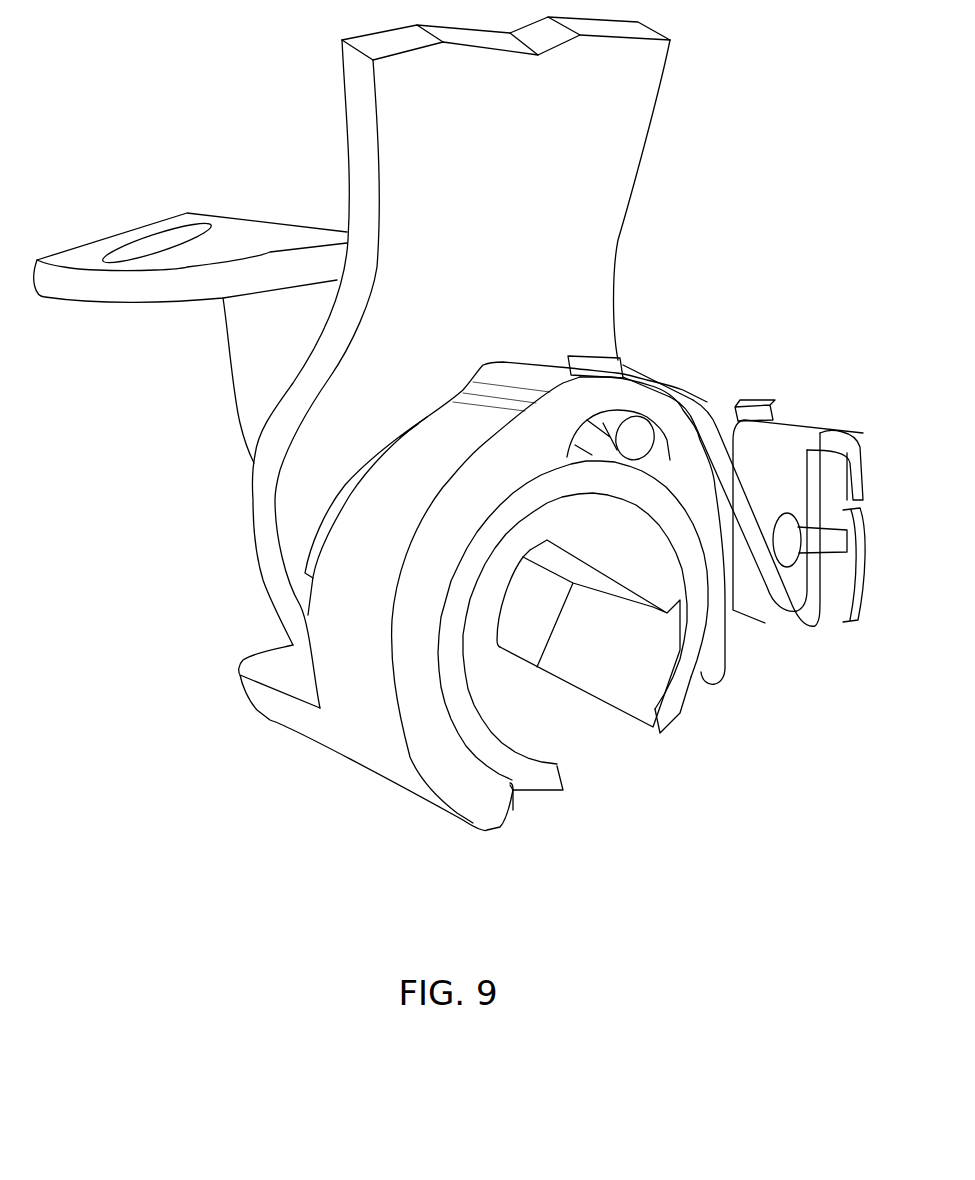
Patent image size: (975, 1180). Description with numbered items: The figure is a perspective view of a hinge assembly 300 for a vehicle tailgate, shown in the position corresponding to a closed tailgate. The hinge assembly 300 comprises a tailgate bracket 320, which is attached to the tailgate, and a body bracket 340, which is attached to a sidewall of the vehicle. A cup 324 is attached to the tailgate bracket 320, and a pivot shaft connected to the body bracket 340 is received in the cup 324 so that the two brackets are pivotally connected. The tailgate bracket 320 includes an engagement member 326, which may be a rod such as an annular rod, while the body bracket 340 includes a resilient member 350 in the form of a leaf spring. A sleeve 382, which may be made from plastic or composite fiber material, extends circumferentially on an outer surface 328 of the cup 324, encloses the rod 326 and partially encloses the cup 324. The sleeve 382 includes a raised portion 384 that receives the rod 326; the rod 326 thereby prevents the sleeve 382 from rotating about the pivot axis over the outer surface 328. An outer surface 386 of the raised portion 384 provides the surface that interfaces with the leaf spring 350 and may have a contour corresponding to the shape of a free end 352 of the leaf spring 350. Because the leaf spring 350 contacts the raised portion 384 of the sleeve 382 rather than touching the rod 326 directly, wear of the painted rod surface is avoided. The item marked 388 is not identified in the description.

The hinge assembly 300 is at (455, 435).
The tailgate bracket 320 is at (350, 153).
The cup 324 is at (553, 795).
The engagement member 326 is at (703, 397).
The outer surface 328 is at (673, 717).
The body bracket 340 is at (750, 406).
The resilient member 350 is at (750, 516).
The free end 352 is at (672, 377).
The sleeve 382 is at (333, 565).
The raised portion 384 is at (515, 361).
The outer surface 386 is at (553, 370).
The pin 388 is at (637, 438).